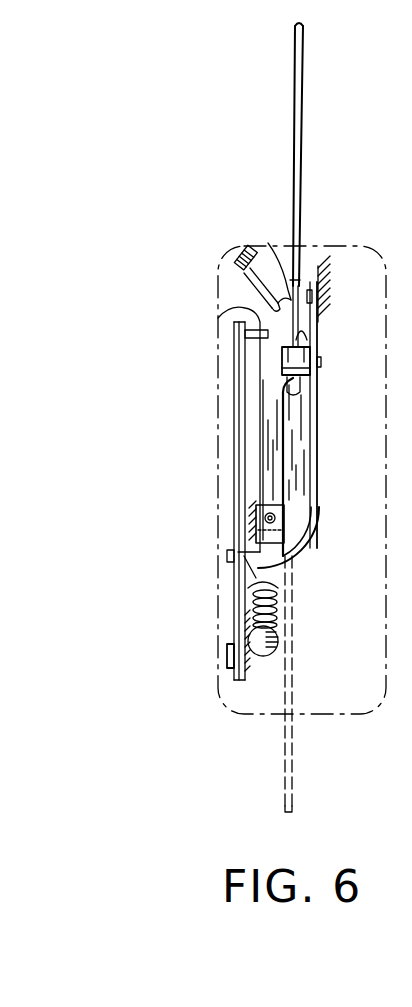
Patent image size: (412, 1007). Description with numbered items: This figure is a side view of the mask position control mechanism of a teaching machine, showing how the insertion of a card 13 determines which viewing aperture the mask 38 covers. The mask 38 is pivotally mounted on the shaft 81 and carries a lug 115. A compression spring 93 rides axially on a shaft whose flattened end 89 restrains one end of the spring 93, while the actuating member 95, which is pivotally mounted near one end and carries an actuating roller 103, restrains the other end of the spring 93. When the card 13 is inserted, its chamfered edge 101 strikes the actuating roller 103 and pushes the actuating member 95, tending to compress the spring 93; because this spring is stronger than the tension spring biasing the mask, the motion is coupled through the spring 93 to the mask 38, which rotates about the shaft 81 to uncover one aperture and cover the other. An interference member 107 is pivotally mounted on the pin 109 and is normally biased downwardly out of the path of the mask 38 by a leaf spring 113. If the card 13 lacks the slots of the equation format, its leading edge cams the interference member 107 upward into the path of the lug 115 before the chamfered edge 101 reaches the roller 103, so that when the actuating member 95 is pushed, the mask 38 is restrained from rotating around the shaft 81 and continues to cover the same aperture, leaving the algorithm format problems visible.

The card 13 is at (301, 108).
The mask 38 is at (240, 422).
The shaft 81 is at (226, 656).
The flattened end 89 is at (279, 641).
The compression spring 93 is at (281, 601).
The actuating member 95 is at (318, 422).
The chamfered edge 101 is at (270, 262).
The actuating roller 103 is at (298, 372).
The interference member 107 is at (272, 378).
The pin 109 is at (280, 514).
The leaf spring 113 is at (242, 291).
The lug 115 is at (234, 323).